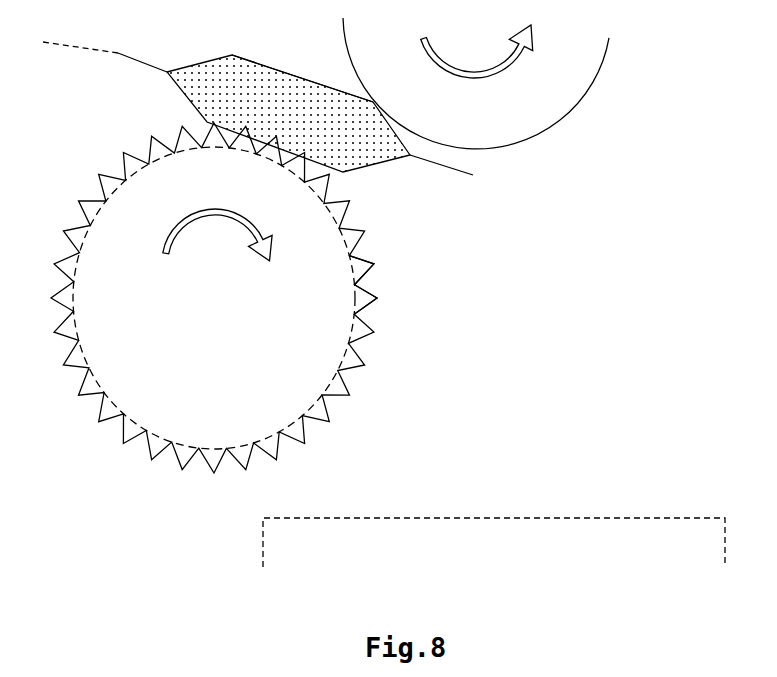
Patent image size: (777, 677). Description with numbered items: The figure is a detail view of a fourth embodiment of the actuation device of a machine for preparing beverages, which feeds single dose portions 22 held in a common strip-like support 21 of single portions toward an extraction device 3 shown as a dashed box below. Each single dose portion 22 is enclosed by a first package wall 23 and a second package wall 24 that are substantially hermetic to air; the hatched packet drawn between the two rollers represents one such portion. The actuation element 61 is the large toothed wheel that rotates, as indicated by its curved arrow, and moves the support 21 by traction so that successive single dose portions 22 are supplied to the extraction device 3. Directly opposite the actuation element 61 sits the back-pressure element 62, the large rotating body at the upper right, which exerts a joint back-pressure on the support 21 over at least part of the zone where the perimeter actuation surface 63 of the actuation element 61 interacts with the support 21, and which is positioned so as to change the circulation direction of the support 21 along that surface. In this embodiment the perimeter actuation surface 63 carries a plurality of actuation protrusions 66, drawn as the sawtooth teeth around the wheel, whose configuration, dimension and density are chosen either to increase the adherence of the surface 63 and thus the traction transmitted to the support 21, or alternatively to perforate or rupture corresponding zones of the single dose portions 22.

The extraction device 3 is at (494, 542).
The support of single portions 21 is at (80, 39).
The single dose portion 22 is at (142, 56).
The first package wall 23 is at (283, 113).
The second package wall 24 is at (299, 73).
The actuation element 61 is at (214, 298).
The back-pressure element 62 is at (476, 96).
The perimeter actuation surface 63 is at (371, 275).
The actuation protrusions 66 is at (391, 308).